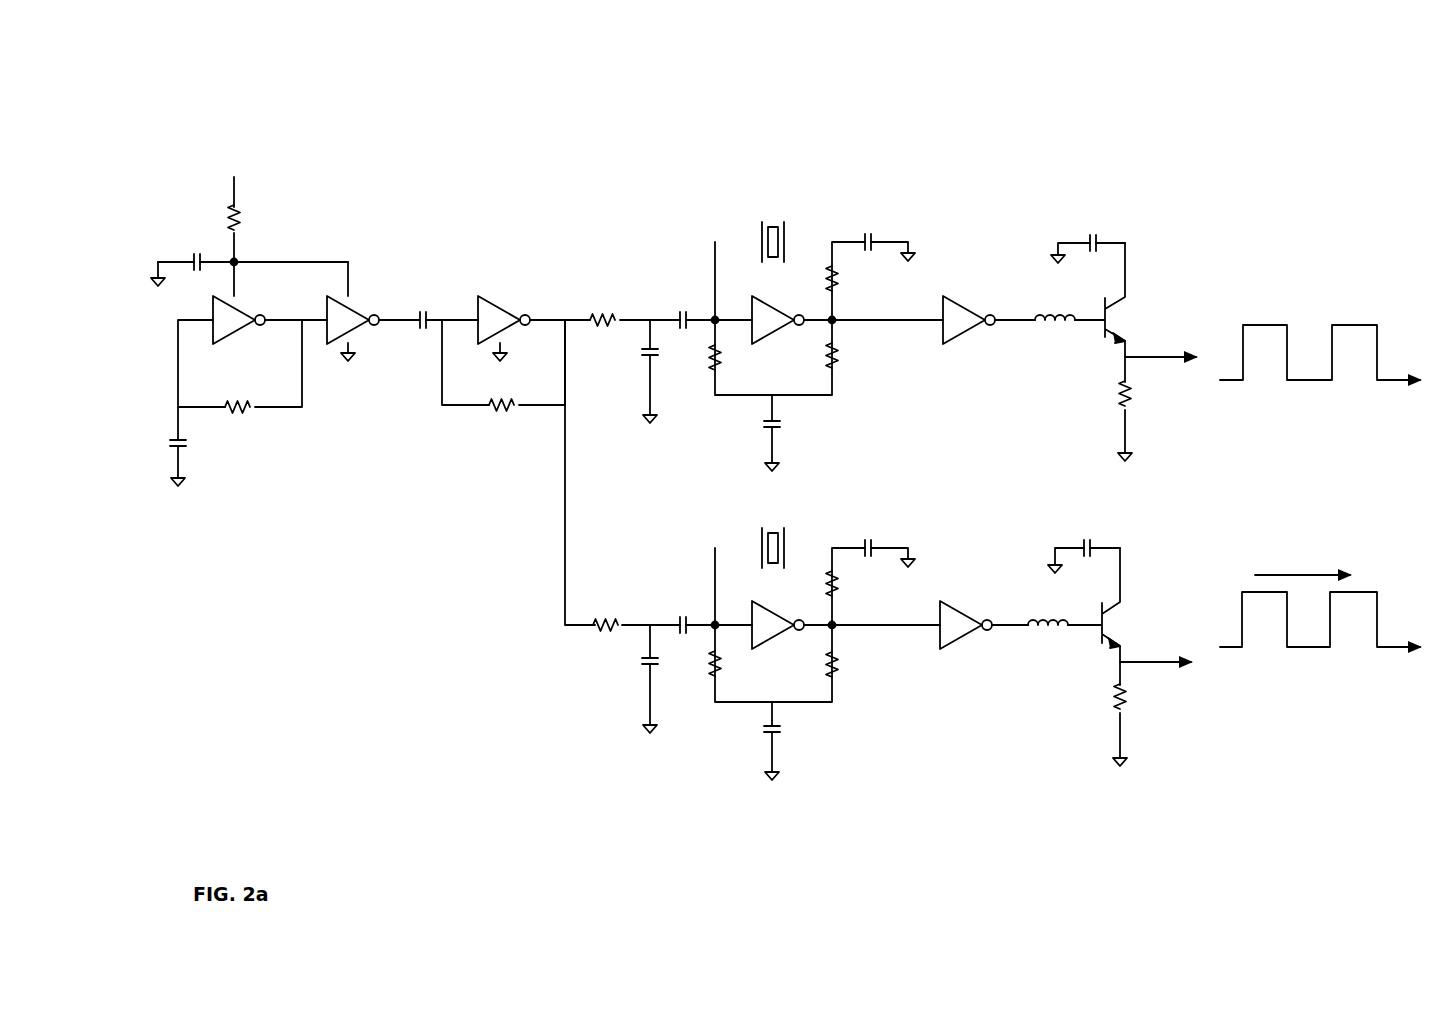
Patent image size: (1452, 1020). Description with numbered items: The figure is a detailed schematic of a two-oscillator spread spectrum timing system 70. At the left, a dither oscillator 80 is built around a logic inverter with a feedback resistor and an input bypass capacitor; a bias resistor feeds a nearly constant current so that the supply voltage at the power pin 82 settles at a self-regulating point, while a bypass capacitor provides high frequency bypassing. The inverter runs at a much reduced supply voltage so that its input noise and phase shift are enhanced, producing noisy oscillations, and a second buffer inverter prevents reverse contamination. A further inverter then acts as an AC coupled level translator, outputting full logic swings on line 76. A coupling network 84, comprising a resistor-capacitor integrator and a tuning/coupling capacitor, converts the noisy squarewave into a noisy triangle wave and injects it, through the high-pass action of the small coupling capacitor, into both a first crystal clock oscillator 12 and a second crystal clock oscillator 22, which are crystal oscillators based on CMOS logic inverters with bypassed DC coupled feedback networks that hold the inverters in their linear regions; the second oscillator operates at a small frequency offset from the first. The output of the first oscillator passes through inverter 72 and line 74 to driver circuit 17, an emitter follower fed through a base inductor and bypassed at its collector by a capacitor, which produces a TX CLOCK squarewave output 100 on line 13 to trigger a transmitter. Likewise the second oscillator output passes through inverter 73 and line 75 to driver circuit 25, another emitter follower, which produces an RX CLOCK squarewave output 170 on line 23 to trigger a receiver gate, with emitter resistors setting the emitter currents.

The dither oscillator 80 is at (340, 193).
The power pin 82 is at (348, 262).
The two-oscillator spread spectrum timing system 70 is at (535, 186).
The line 76 is at (571, 317).
The coupling network 84 is at (621, 418).
The first crystal clock oscillator 12 is at (852, 190).
The inverter 72 is at (957, 297).
The line 74 is at (1023, 322).
The driver circuit 17 is at (1142, 190).
The line 13 is at (1172, 350).
The TX CLOCK squarewave output 100 is at (1390, 358).
The second crystal clock oscillator 22 is at (693, 750).
The inverter 73 is at (957, 600).
The line 75 is at (1018, 628).
The driver circuit 25 is at (1073, 740).
The line 23 is at (1165, 660).
The RX CLOCK squarewave output 170 is at (1383, 620).